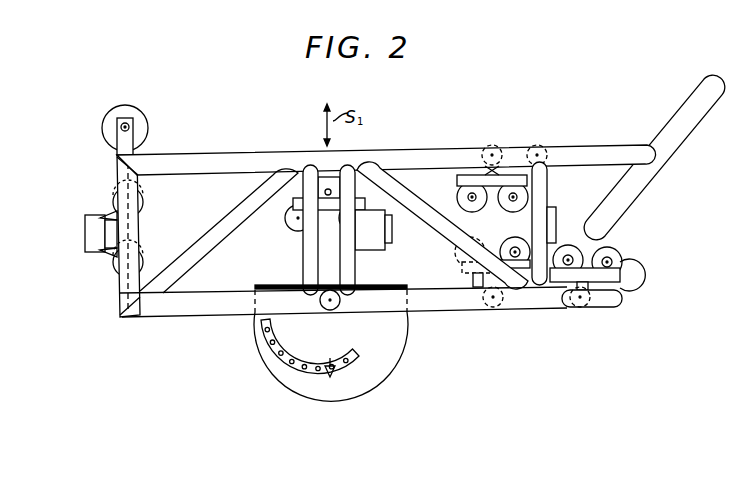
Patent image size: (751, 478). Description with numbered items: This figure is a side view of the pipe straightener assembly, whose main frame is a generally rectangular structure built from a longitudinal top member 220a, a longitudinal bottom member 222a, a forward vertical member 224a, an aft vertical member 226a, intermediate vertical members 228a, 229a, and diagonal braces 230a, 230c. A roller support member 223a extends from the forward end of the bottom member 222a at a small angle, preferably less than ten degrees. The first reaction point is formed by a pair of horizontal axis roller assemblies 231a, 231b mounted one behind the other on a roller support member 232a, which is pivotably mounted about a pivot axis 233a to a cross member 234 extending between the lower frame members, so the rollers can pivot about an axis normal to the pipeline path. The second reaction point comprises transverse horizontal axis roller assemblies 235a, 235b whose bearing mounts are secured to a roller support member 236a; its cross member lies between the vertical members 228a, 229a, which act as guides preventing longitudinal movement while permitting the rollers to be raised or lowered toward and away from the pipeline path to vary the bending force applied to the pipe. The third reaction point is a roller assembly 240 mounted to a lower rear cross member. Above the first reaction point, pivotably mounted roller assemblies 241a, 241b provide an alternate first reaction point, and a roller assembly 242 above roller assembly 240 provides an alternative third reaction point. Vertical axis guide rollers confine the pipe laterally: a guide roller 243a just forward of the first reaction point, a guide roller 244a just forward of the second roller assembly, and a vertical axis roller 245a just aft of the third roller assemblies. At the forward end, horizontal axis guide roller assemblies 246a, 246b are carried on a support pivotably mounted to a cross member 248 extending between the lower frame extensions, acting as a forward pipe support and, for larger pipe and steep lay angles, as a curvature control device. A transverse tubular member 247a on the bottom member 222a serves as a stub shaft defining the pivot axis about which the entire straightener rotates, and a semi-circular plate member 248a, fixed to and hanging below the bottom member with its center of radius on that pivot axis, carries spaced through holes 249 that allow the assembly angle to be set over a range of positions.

The longitudinal top member 220a is at (428, 152).
The longitudinal bottom member 222a is at (447, 290).
The roller support member 223a is at (603, 303).
The forward vertical member 224a is at (547, 180).
The aft vertical member 226a is at (142, 236).
The intermediate vertical member 228a is at (350, 272).
The intermediate vertical member 229a is at (310, 267).
The diagonal brace 230a is at (440, 221).
The diagonal brace 230c is at (187, 267).
The horizontal axis roller assembly 231a is at (523, 233).
The horizontal axis roller assembly 231b is at (453, 263).
The roller support member 232a is at (468, 290).
The pivot axis 233a is at (470, 308).
The cross member 234 is at (502, 308).
The transverse horizontal axis roller assembly 235a is at (390, 243).
The transverse horizontal axis roller assembly 235b is at (297, 232).
The roller support member 236a is at (293, 213).
The transverse horizontal axis roller assembly 240 is at (113, 268).
The pivotably mounted roller assembly 241a is at (524, 133).
The pivotably mounted roller assembly 241b is at (457, 190).
The roller assembly 242 is at (147, 203).
The vertical axis guide roller 243a is at (553, 207).
The vertical axis guide roller 244a is at (392, 228).
The vertical axis roller 245a is at (93, 227).
The horizontal axis guide roller assembly 246a is at (612, 250).
The horizontal axis guide roller assembly 246b is at (592, 238).
The tubular member 247a is at (333, 308).
The cross member 248 is at (568, 300).
The semi-circular plate member 248a is at (367, 362).
The through holes 249 is at (330, 377).